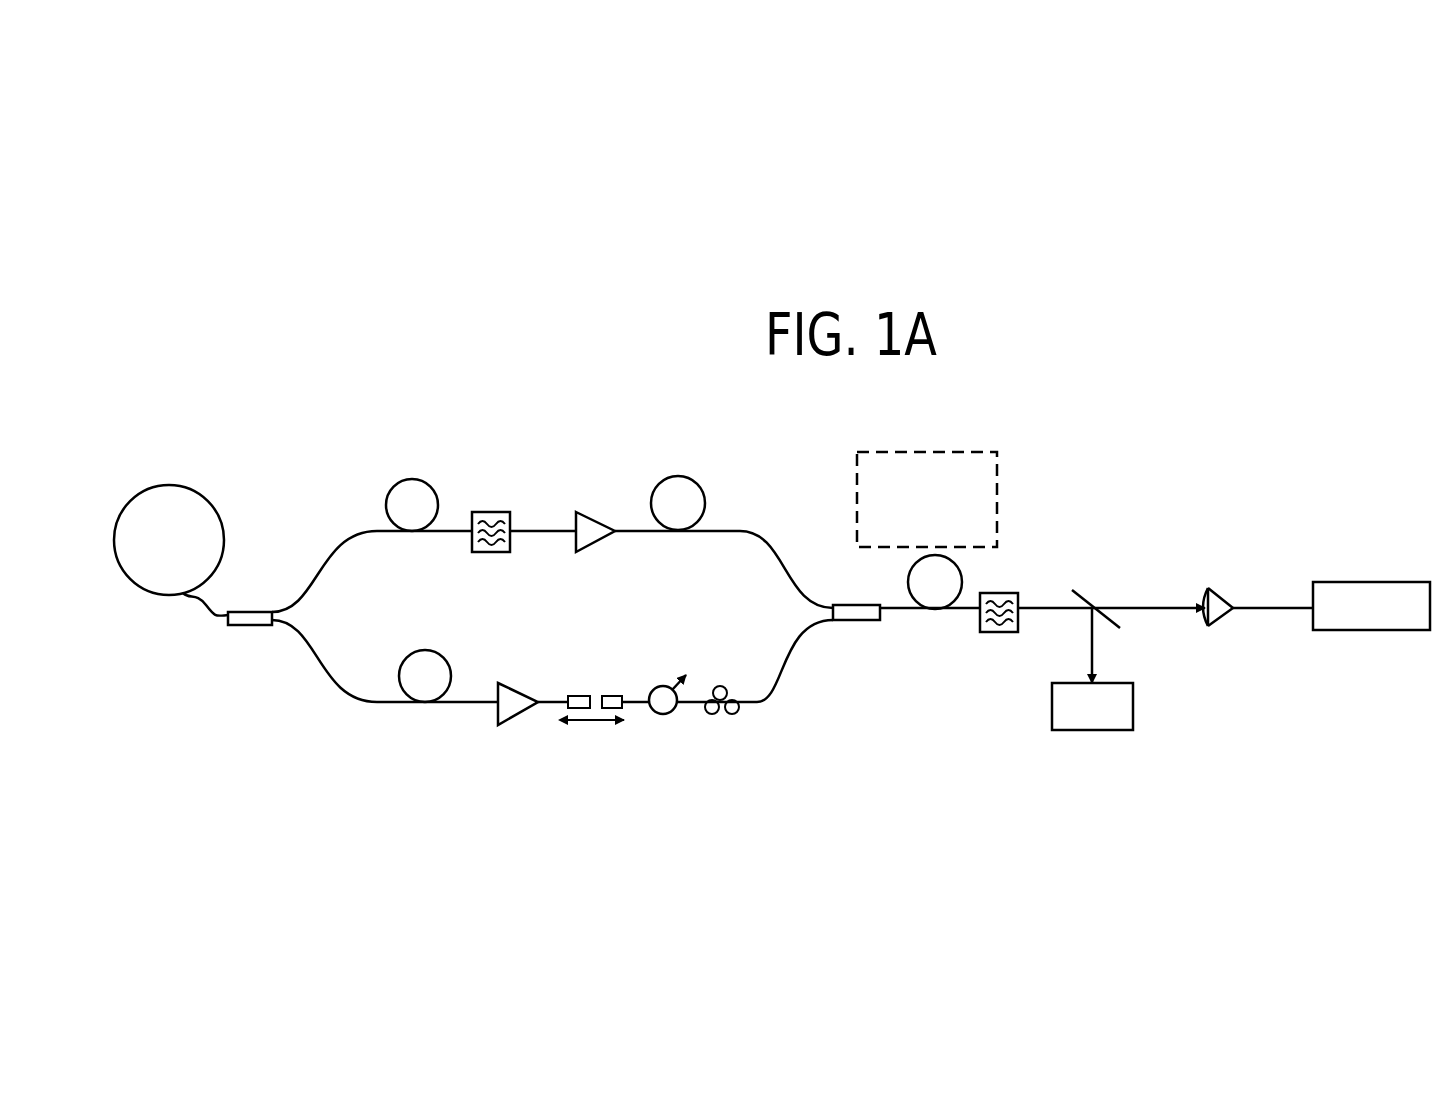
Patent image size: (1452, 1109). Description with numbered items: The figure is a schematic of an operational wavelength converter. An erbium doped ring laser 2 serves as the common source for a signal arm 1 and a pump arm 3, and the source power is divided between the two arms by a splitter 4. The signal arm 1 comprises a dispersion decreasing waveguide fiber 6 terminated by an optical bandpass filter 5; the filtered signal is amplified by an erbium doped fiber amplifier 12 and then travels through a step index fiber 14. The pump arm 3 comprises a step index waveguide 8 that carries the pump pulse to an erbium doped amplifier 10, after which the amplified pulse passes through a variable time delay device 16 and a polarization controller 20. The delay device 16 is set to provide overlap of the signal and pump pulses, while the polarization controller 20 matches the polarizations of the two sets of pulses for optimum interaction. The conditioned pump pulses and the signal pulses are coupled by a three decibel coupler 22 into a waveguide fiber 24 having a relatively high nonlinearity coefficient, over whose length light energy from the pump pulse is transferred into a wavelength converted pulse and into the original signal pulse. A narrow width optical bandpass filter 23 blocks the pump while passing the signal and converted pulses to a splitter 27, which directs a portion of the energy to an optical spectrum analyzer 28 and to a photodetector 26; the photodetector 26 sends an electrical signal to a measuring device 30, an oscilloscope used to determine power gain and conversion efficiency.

The signal arm 1 is at (537, 564).
The erbium doped ring laser 2 is at (222, 512).
The pump arm 3 is at (553, 683).
The splitter 4 is at (243, 626).
The optical bandpass filter 5 is at (505, 512).
The dispersion decreasing waveguide fiber 6 is at (448, 531).
The step index waveguide 8 is at (340, 693).
The erbium doped amplifier 10 is at (512, 726).
The erbium doped fiber amplifier 12 is at (597, 511).
The step index fiber 14 is at (707, 500).
The variable time delay device 16 is at (622, 712).
The polarization controller 20 is at (732, 713).
The 3 dB coupler 22 is at (853, 622).
The optical bandpass filter 23 is at (1007, 592).
The waveguide fiber 24 is at (909, 572).
The photodetector 26 is at (1225, 588).
The splitter 27 is at (1087, 591).
The optical spectrum analyzer 28 is at (1102, 730).
The measuring device 30 is at (1388, 582).